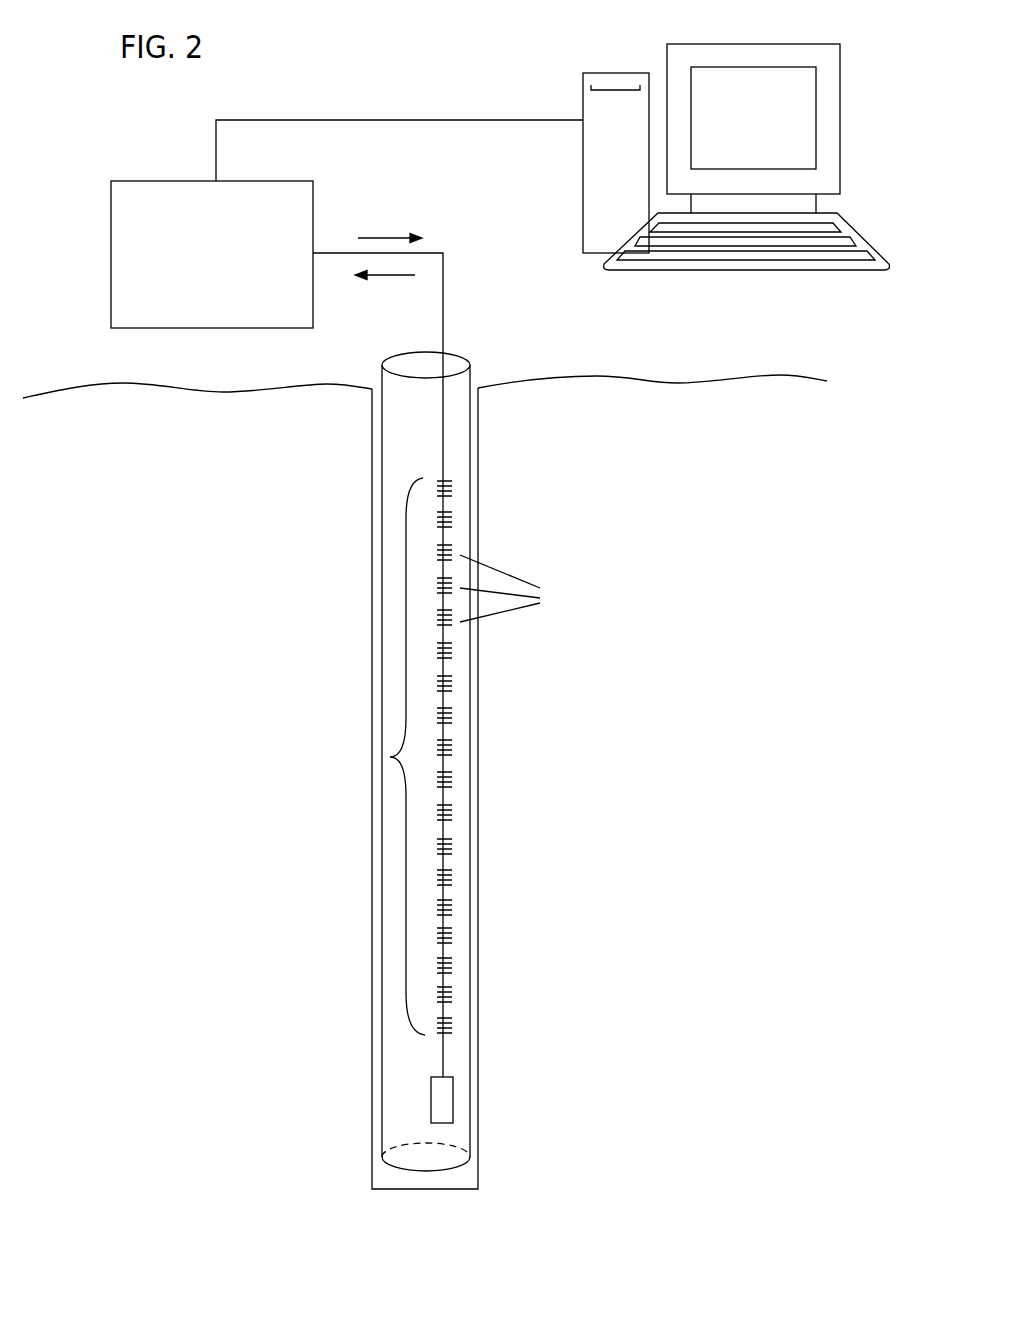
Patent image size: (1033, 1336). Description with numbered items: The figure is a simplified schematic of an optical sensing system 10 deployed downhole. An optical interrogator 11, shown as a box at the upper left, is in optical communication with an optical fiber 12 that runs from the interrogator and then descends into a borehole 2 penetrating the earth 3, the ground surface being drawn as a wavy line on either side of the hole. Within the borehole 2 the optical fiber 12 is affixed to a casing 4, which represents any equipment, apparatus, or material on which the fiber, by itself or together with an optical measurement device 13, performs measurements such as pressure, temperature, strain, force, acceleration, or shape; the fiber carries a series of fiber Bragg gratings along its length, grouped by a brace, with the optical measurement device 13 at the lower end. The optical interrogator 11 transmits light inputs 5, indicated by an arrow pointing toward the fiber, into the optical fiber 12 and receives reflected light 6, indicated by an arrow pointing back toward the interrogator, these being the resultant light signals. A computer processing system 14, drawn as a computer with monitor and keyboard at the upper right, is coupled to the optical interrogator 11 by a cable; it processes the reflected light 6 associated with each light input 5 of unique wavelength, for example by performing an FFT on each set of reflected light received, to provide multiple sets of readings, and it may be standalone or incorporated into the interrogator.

The borehole 2 is at (480, 428).
The earth 3 is at (201, 460).
The casing 4 is at (472, 377).
The light inputs 5 is at (387, 238).
The reflected light 6 is at (382, 275).
The optical sensing system 10 is at (348, 80).
The optical interrogator 11 is at (317, 197).
The optical fiber 12 is at (443, 312).
The optical measurement device 13 is at (390, 757).
The computer processing system 14 is at (582, 92).